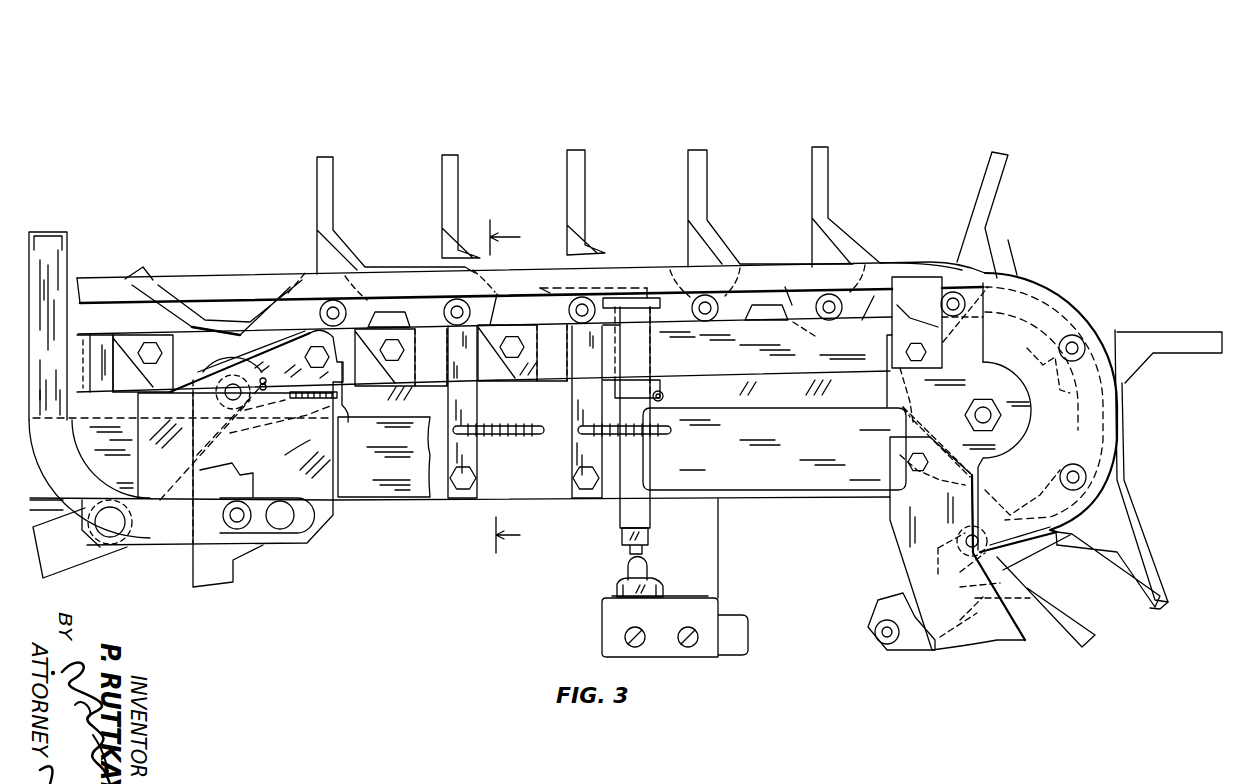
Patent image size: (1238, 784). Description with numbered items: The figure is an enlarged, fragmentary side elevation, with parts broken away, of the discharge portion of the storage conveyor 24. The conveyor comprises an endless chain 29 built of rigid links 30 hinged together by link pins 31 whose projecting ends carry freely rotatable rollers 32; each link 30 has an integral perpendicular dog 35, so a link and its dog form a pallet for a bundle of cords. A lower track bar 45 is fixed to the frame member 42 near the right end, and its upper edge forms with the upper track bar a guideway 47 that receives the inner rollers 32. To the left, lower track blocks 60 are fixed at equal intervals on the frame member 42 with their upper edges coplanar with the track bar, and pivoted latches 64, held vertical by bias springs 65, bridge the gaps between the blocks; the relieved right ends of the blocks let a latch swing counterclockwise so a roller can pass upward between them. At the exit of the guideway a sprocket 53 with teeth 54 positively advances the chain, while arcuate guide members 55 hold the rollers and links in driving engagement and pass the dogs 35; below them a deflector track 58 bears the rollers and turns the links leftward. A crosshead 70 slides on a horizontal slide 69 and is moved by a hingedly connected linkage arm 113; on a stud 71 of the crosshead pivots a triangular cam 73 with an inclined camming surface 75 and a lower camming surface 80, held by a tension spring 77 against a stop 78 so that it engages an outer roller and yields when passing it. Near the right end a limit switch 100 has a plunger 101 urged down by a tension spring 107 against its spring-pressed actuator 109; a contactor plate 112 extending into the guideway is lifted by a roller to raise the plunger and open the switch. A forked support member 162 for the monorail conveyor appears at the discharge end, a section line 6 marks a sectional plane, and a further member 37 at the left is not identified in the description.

The storage conveyor 24 is at (1008, 75).
The endless chain 29 is at (723, 219).
The rigid link 30 is at (378, 268).
The link pin 31 is at (456, 304).
The roller 32 is at (412, 305).
The perpendicular dog 35 is at (442, 185).
The guide arm 37 is at (208, 282).
The frame member 42 is at (445, 367).
The lower track bar 45 is at (792, 375).
The guideway 47 is at (514, 303).
The sprocket 53 is at (1117, 404).
The tooth 54 is at (1022, 338).
The arcuate guide member 55 is at (1040, 298).
The deflector track 58 is at (915, 645).
The lower track block 60 is at (340, 365).
The latch 64 is at (572, 466).
The bias spring 65 is at (622, 438).
The horizontal slide 69 is at (398, 497).
The crosshead 70 is at (322, 518).
The stud 71 is at (256, 355).
The triangular shaped cam 73 is at (307, 443).
The inclined camming surface 75 is at (276, 395).
The tension spring 77 is at (183, 441).
The stop 78 is at (353, 403).
The lower camming surface 80 is at (266, 448).
The limit switch 100 is at (601, 626).
The plunger 101 is at (648, 518).
The tension spring 107 is at (662, 397).
The spring-pressed actuator 109 is at (648, 566).
The contactor plate 112 is at (633, 292).
The linkage arm 113 is at (80, 560).
The forked support member 162 is at (890, 518).
The section line 6 is at (511, 386).